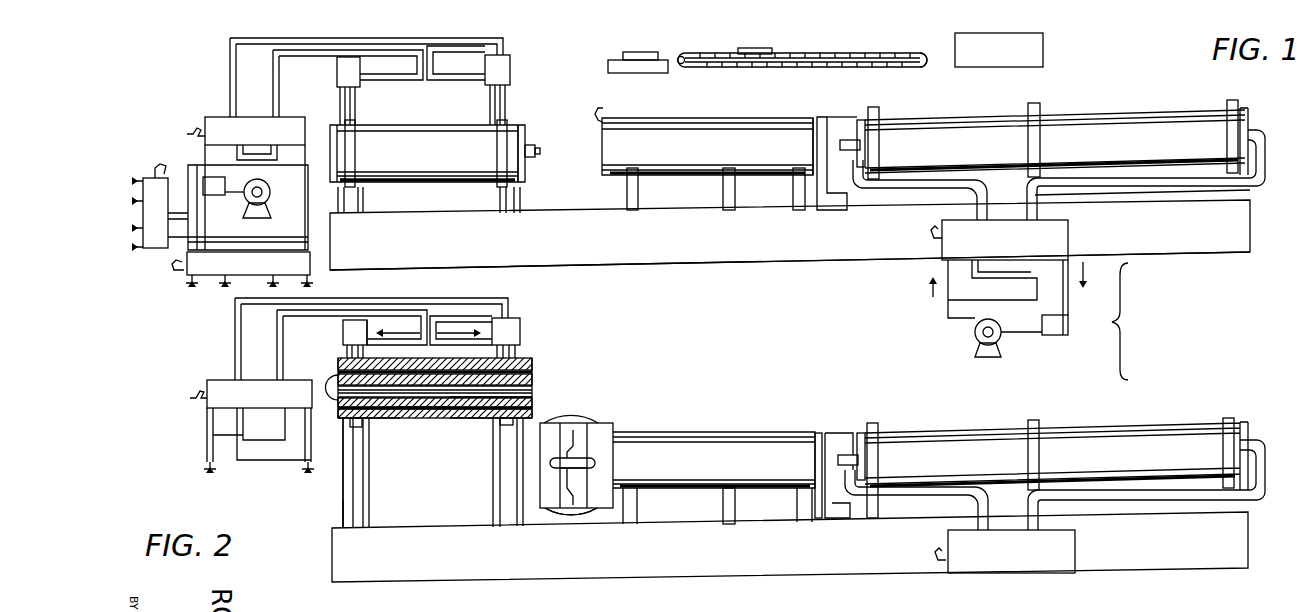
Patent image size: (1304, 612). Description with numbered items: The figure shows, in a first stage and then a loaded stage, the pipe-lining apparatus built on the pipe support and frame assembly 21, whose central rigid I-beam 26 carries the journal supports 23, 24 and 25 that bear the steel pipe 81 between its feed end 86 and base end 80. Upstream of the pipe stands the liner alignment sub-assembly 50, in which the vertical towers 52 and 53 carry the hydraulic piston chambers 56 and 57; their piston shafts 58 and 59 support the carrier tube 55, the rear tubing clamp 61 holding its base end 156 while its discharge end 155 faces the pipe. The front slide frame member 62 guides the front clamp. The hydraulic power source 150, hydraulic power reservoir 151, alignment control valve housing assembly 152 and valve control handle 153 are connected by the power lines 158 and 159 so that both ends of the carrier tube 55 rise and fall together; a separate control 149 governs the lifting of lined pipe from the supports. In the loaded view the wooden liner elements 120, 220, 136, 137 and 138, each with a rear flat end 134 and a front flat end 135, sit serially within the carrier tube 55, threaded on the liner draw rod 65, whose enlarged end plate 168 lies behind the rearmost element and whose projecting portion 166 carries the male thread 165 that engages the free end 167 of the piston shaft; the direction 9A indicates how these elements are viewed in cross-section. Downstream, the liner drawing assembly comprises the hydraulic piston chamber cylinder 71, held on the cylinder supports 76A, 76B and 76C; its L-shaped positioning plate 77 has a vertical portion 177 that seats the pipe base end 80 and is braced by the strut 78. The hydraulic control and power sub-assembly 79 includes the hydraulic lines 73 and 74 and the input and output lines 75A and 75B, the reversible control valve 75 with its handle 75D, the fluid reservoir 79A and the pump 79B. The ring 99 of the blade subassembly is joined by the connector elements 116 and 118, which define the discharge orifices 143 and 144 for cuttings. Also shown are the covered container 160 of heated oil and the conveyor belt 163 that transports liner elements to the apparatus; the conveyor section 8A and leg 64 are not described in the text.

In FIG. 1, the conveyor section 8A is at (1110, 97).
In FIG. 2, the viewing direction 9A is at (560, 393).
In FIG. 1, the pipe support and frame assembly 21 is at (639, 262).
In FIG. 1, the journal support 23 is at (632, 193).
In FIG. 1, the journal support 24 is at (730, 193).
In FIG. 2, the journal support 24 is at (730, 500).
In FIG. 1, the journal support 25 is at (800, 193).
In FIG. 1, the I-beam 26 is at (409, 249).
In FIG. 2, the I-beam 26 is at (403, 567).
In FIG. 2, the liner alignment sub-assembly 50 is at (524, 320).
In FIG. 1, the vertical tower 52 is at (512, 190).
In FIG. 2, the vertical tower 53 is at (343, 496).
In FIG. 1, the carrier tube 55 is at (436, 158).
In FIG. 1, the hydraulic piston chamber 56 is at (485, 73).
In FIG. 1, the hydraulic piston chamber 57 is at (360, 73).
In FIG. 1, the hydraulic piston shaft 58 is at (500, 103).
In FIG. 1, the hydraulic piston shaft 59 is at (350, 103).
In FIG. 1, the rear tubing clamp 61 is at (351, 167).
In FIG. 2, the front right vertical slide frame member 62 is at (507, 503).
In FIG. 2, the leg 64 is at (362, 507).
In FIG. 1, the liner draw rod 65 is at (503, 165).
In FIG. 2, the hydraulic piston chamber cylinder 71 is at (1139, 470).
In FIG. 1, the hydraulic line 73 is at (948, 317).
In FIG. 1, the hydraulic line 74 is at (1068, 311).
In FIG. 1, the hydraulic control valve 75 is at (1017, 247).
In FIG. 2, the hydraulic control valve 75 is at (1020, 559).
In FIG. 1, the input hydraulic line 75A is at (910, 186).
In FIG. 1, the output hydraulic line 75B is at (1092, 188).
In FIG. 2, the valve handle 75D is at (932, 552).
In FIG. 1, the cylinder support 76A is at (878, 130).
In FIG. 2, the cylinder support 76A is at (872, 510).
In FIG. 1, the cylinder support 76B is at (1040, 125).
In FIG. 1, the cylinder support 76C is at (1232, 125).
In FIG. 2, the cylinder support 76C is at (1230, 505).
In FIG. 1, the positioning plate 77 is at (830, 200).
In FIG. 2, the strut 78 is at (843, 432).
In FIG. 1, the hydraulic control and power sub-assembly 79 is at (1133, 321).
In FIG. 1, the hydraulic fluid reservoir 79A is at (1062, 325).
In FIG. 1, the pump 79B is at (983, 348).
In FIG. 1, the base end of pipe 80 is at (810, 128).
In FIG. 1, the pipe 81 is at (722, 130).
In FIG. 2, the pipe 81 is at (725, 434).
In FIG. 1, the feed end of pipe 86 is at (611, 109).
In FIG. 2, the ring 99 is at (553, 497).
In FIG. 2, the bottom element 116 is at (571, 516).
In FIG. 2, the second side element 118 is at (574, 464).
In FIG. 1, the wooden liner element 120 is at (645, 55).
In FIG. 2, the wooden liner element 120 is at (532, 411).
In FIG. 2, the rear flat end 134 is at (492, 400).
In FIG. 1, the front flat end 135 is at (152, 232).
In FIG. 2, the liner element 136 is at (478, 402).
In FIG. 2, the liner element 137 is at (450, 400).
In FIG. 2, the liner element 138 is at (405, 410).
In FIG. 2, the discharge orifice 143 is at (572, 490).
In FIG. 2, the discharge orifice 144 is at (568, 432).
In FIG. 1, the control 149 is at (195, 263).
In FIG. 1, the hydraulic power source 150 is at (263, 185).
In FIG. 1, the hydraulic power reservoir 151 is at (208, 195).
In FIG. 1, the hydraulic alignment control valve housing assembly 152 is at (205, 121).
In FIG. 2, the hydraulic alignment control valve housing assembly 152 is at (230, 390).
In FIG. 1, the valve control handle 153 is at (187, 134).
In FIG. 2, the valve control handle 153 is at (190, 395).
In FIG. 1, the discharge end of carrier tube 155 is at (521, 127).
In FIG. 2, the discharge end of carrier tube 155 is at (532, 362).
In FIG. 2, the base end of carrier tube 156 is at (346, 422).
In FIG. 1, the power line 158 is at (230, 77).
In FIG. 1, the power line 159 is at (268, 97).
In FIG. 1, the covered container 160 is at (1043, 50).
In FIG. 1, the conveyor belt 163 is at (870, 56).
In FIG. 1, the male thread 165 is at (541, 153).
In FIG. 2, the male thread 165 is at (532, 396).
In FIG. 1, the projecting front end portion 166 is at (537, 146).
In FIG. 1, the free end of piston shaft 167 is at (848, 140).
In FIG. 2, the free end of piston shaft 167 is at (852, 455).
In FIG. 2, the end plate 168 is at (333, 378).
In FIG. 2, the vertical flat plate portion 177 is at (818, 436).
In FIG. 1, the liner element 220 is at (760, 50).
In FIG. 2, the liner element 220 is at (532, 385).